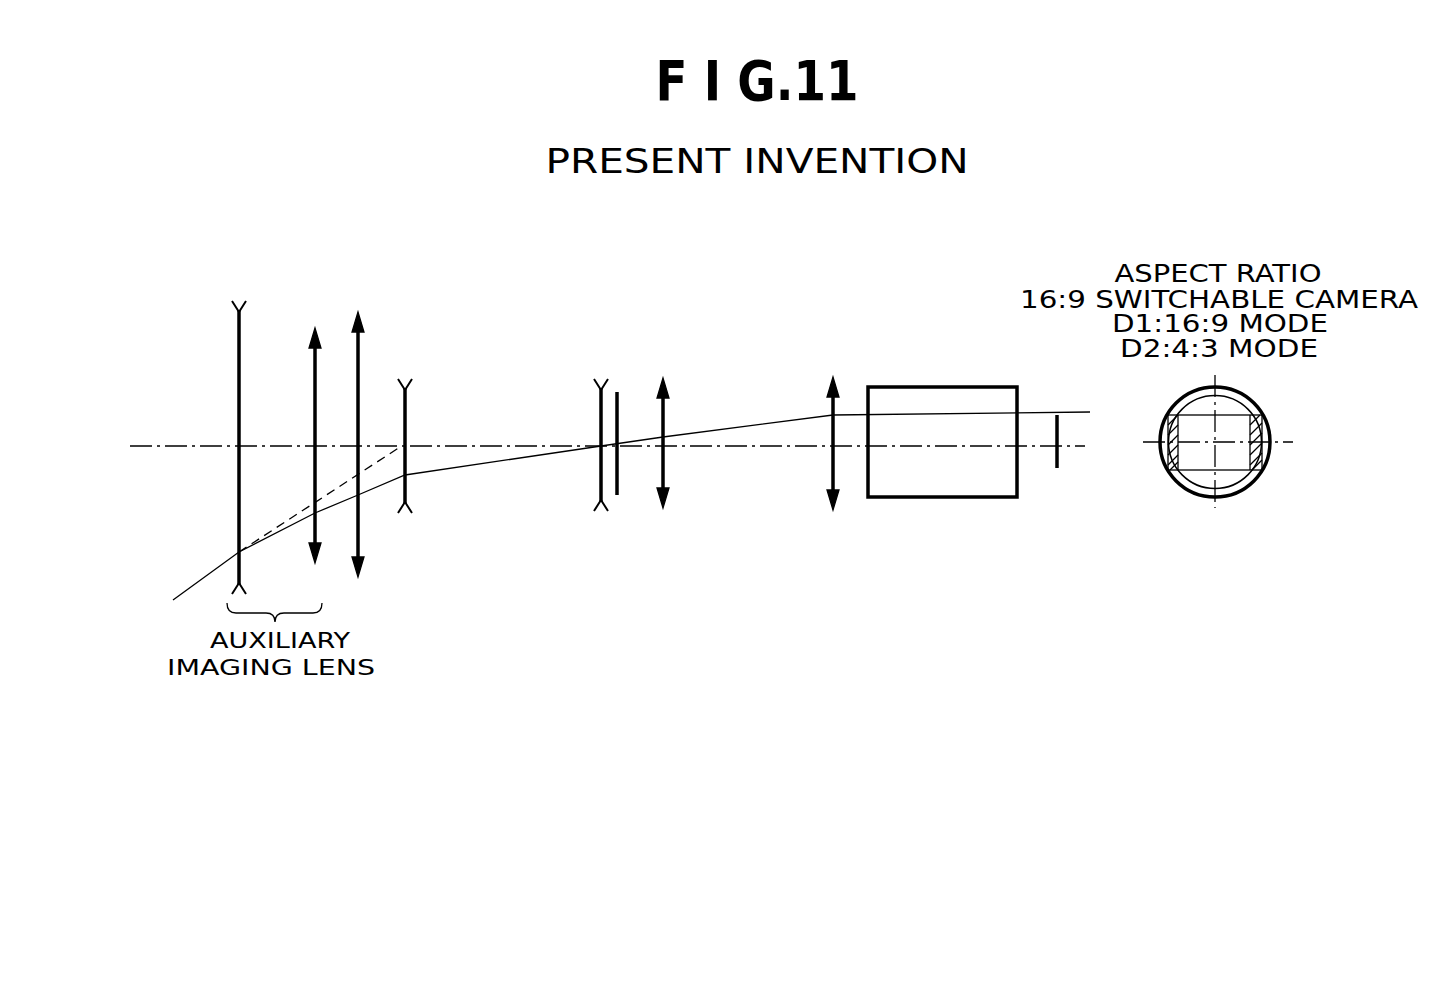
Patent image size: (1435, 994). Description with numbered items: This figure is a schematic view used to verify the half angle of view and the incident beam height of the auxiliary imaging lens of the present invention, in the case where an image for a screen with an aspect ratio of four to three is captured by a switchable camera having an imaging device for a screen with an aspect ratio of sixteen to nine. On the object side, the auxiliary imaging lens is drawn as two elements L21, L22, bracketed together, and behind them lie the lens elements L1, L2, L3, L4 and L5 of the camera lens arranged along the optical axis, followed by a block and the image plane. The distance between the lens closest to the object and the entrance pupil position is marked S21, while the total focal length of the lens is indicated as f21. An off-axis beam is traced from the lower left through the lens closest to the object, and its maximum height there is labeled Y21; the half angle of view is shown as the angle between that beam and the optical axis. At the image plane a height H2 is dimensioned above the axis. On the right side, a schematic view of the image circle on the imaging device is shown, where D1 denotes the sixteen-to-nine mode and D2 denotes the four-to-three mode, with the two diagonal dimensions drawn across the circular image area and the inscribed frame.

The auxiliary imaging lens element L21 is at (216, 437).
The auxiliary imaging lens element L22 is at (310, 430).
The first lens group L1 is at (357, 428).
The second lens group L2 is at (421, 441).
The third lens group L3 is at (597, 429).
The fourth lens group L4 is at (661, 428).
The fifth lens group L5 is at (830, 429).
The distance between the lens closest to the object and the entrance pupil position S21 is at (398, 385).
The maximum height of incident beam Y21 is at (243, 552).
The focal length of auxiliary imaging lens f21 is at (618, 267).
The image height H2 is at (1083, 365).
The 16:9 mode image circle D1 is at (1267, 420).
The 4:3 mode image circle D2 is at (1312, 487).